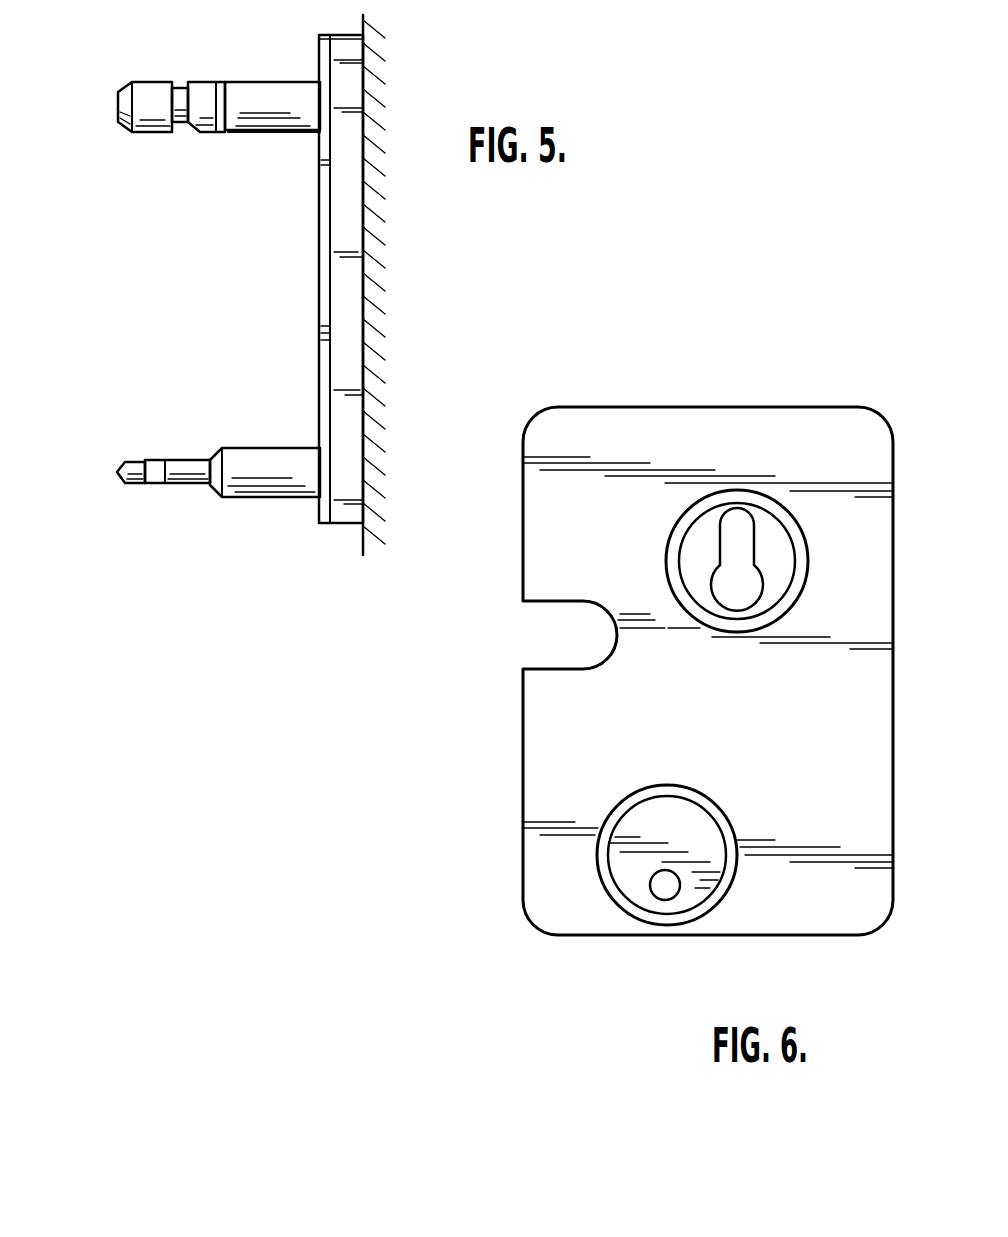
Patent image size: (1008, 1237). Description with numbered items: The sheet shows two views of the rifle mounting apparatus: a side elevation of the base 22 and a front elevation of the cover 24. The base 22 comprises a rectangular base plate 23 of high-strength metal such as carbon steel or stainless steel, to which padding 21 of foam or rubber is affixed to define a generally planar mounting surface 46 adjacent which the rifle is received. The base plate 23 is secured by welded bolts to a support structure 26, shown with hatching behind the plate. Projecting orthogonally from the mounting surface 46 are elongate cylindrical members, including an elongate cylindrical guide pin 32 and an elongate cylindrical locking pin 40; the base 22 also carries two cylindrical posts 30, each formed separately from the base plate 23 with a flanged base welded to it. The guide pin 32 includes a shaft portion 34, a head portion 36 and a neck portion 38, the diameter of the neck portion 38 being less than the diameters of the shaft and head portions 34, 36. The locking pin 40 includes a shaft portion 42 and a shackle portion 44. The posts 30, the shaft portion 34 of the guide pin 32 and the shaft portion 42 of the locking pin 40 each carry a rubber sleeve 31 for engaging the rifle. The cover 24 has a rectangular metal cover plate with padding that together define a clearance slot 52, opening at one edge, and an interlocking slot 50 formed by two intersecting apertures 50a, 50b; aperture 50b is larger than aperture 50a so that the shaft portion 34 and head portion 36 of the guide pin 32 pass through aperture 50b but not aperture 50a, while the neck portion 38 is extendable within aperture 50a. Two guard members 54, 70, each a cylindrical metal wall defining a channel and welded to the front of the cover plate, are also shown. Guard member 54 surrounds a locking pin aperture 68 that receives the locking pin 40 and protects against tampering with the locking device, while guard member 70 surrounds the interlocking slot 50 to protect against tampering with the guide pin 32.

In FIG. 5, the padding 21 is at (325, 224).
In FIG. 5, the base 22 is at (400, 298).
In FIG. 5, the base plate 23 is at (350, 196).
In FIG. 6, the cover 24 is at (722, 430).
In FIG. 5, the support structure 26 is at (380, 82).
In FIG. 5, the post 30 is at (260, 98).
In FIG. 5, the rubber sleeve 31 is at (293, 118).
In FIG. 5, the guide pin 32 is at (180, 254).
In FIG. 5, the shaft portion 34 is at (206, 134).
In FIG. 5, the head portion 36 is at (160, 115).
In FIG. 5, the neck portion 38 is at (176, 88).
In FIG. 5, the locking pin 40 is at (173, 490).
In FIG. 5, the shaft portion 42 is at (249, 473).
In FIG. 5, the shackle portion 44 is at (157, 475).
In FIG. 5, the mounting surface 46 is at (318, 332).
In FIG. 6, the interlocking slot 50 is at (706, 547).
In FIG. 6, the aperture 50a is at (742, 538).
In FIG. 6, the aperture 50b is at (742, 592).
In FIG. 6, the clearance slot 52 is at (575, 634).
In FIG. 6, the guard member 54 is at (712, 800).
In FIG. 6, the locking pin aperture 68 is at (677, 897).
In FIG. 6, the guard member 70 is at (738, 633).